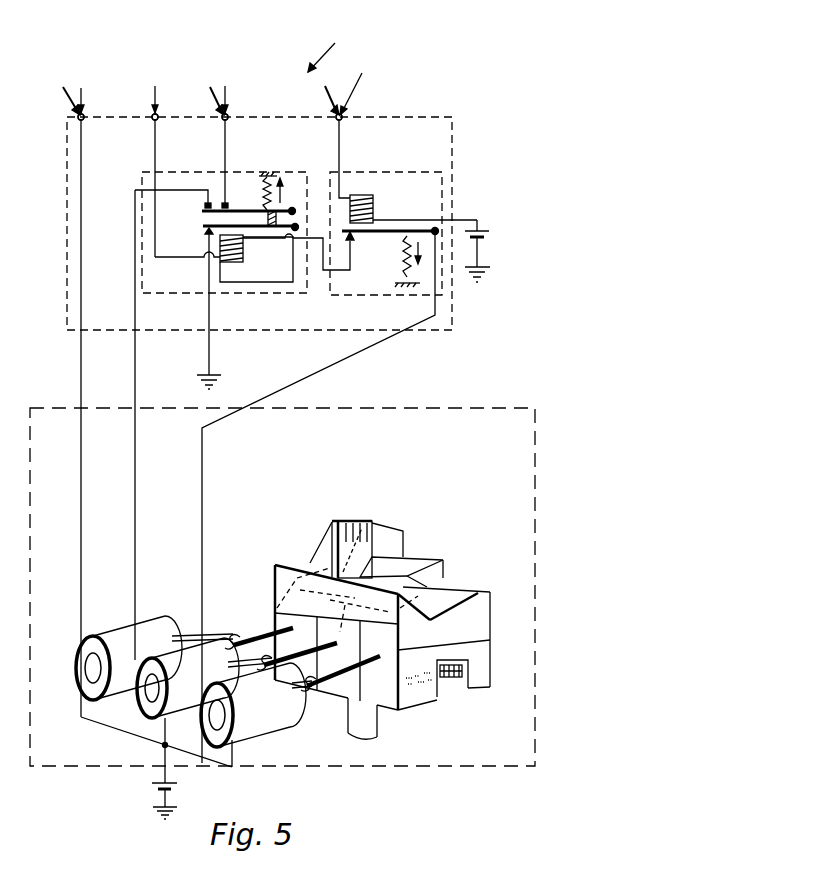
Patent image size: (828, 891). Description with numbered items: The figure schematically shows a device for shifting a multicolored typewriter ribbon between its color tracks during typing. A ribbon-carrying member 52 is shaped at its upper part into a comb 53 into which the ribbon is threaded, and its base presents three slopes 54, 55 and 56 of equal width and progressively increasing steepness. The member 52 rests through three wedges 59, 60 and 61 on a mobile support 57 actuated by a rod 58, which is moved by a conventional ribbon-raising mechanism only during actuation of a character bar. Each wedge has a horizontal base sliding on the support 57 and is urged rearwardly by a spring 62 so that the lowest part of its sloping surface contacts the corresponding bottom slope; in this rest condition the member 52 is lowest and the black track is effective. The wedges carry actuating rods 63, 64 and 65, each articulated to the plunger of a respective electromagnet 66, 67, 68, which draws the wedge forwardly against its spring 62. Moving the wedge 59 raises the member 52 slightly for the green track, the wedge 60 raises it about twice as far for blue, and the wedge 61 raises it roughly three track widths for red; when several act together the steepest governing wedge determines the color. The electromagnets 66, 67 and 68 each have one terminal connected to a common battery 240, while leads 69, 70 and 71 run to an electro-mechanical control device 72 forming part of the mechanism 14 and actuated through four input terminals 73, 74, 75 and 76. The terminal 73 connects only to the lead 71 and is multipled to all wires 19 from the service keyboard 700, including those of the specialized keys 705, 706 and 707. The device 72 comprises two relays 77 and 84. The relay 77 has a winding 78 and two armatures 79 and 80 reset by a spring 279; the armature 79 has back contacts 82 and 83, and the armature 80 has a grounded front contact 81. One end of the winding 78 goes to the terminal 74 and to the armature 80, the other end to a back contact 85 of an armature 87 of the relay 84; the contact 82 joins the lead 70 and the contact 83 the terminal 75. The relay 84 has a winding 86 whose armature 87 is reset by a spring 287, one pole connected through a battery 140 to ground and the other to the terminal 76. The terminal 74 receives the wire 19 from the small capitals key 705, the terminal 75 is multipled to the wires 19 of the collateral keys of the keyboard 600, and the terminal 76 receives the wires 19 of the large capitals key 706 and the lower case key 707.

The mechanism 14 is at (337, 46).
The wires 19 is at (84, 113).
The ribbon-carrying member 52 is at (268, 565).
The comb 53 is at (340, 520).
The slope 54 is at (316, 640).
The slope 55 is at (285, 625).
The slope 56 is at (303, 563).
The mobile support 57 is at (420, 692).
The rod 58 is at (360, 728).
The wedge 59 is at (455, 590).
The wedge 60 is at (418, 556).
The wedge 61 is at (384, 522).
The spring 62 is at (447, 672).
The actuating rod 63 is at (379, 659).
The actuating rod 64 is at (338, 647).
The actuating rod 65 is at (288, 629).
The electromagnet 66 is at (262, 703).
The electromagnet 67 is at (221, 667).
The electromagnet 68 is at (154, 647).
The lead 69 is at (201, 432).
The lead 70 is at (142, 428).
The lead 71 is at (88, 428).
The electro-mechanical control device 72 is at (407, 117).
The input terminal 73 is at (92, 112).
The input terminal 74 is at (163, 113).
The input terminal 75 is at (234, 113).
The input terminal 76 is at (348, 113).
The relay 77 is at (232, 172).
The winding 78 is at (244, 253).
The armature 79 is at (265, 195).
The armature 80 is at (250, 219).
The front contact 81 is at (208, 233).
The back contact 82 is at (198, 203).
The back contact 83 is at (234, 164).
The relay 84 is at (399, 172).
The back contact 85 is at (352, 241).
The winding 86 is at (374, 210).
The armature 87 is at (392, 234).
The battery 140 is at (492, 211).
The common battery 240 is at (184, 783).
The spring 279 is at (279, 200).
The spring 287 is at (414, 261).
The keyboard 600 is at (231, 88).
The service keyboard 700 is at (81, 88).
The small capitals key 705 is at (181, 160).
The large capitals key 706 is at (333, 92).
The lower case key 707 is at (366, 87).